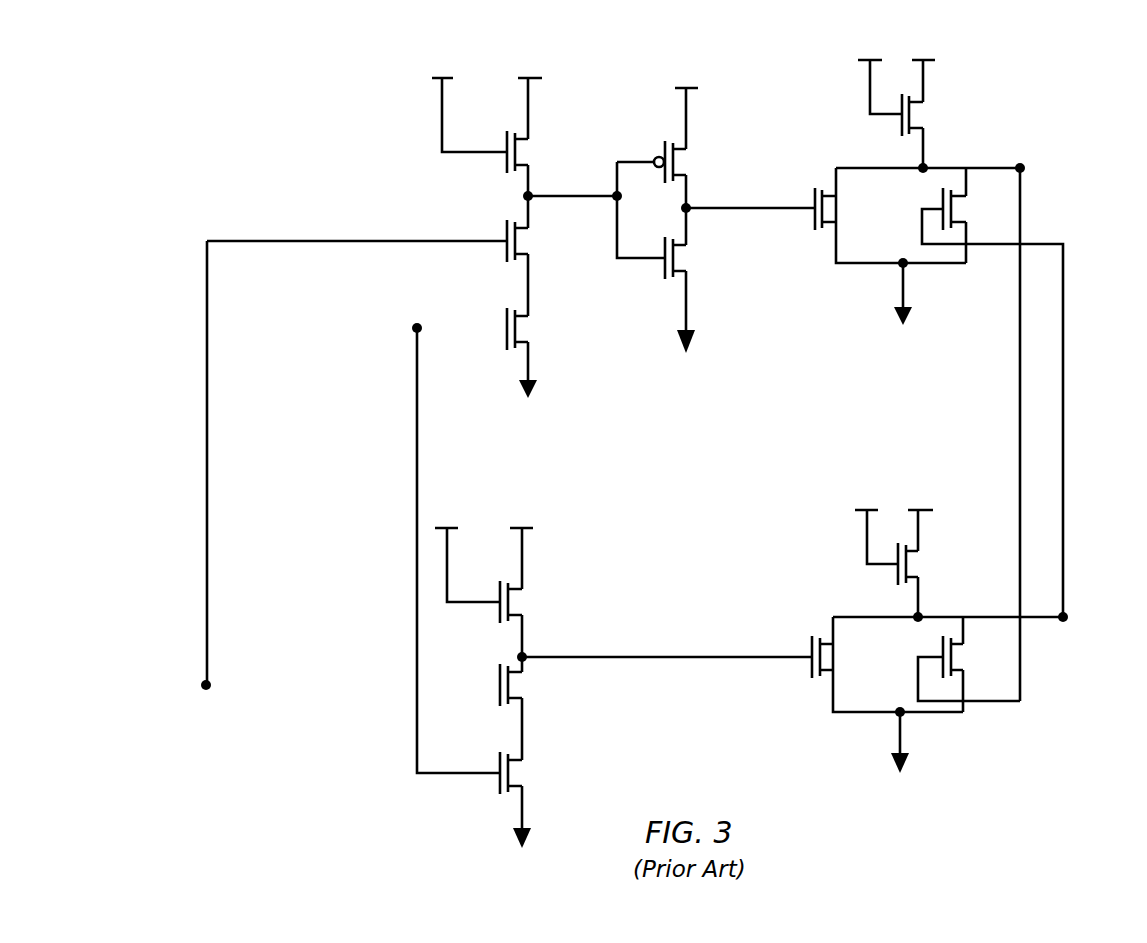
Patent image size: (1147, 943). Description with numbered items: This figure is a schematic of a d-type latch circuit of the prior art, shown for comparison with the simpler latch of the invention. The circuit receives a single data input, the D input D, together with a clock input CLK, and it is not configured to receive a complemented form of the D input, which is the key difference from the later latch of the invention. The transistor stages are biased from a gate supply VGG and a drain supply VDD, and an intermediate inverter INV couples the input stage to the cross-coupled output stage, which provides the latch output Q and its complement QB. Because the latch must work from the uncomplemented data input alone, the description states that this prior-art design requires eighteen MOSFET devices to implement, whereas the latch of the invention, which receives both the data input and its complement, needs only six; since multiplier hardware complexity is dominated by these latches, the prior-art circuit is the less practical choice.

The gate supply voltage VGG is at (673, 323).
The drain supply voltage VDD is at (723, 306).
The clock input CLK is at (507, 328).
The D input D is at (500, 685).
The inverter INV is at (713, 247).
The inverted output Q-bar QB is at (1120, 157).
The output Q is at (1063, 617).